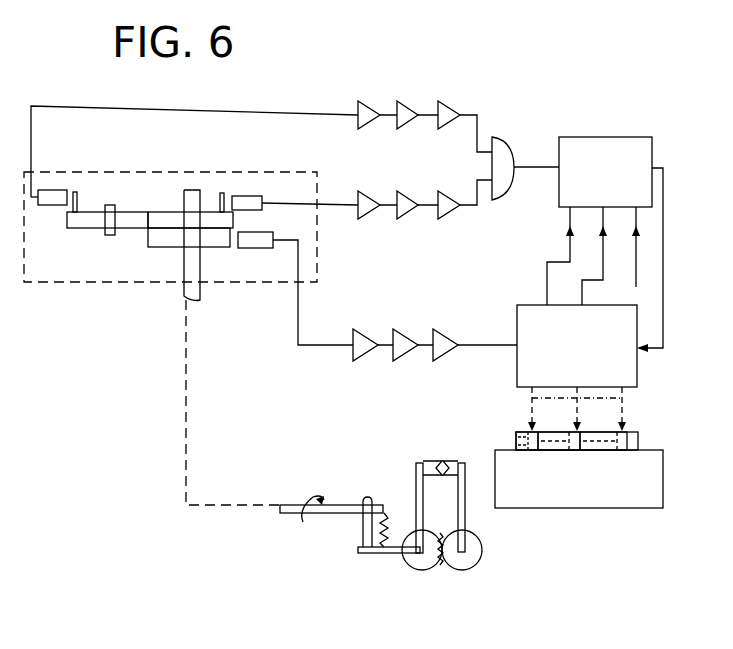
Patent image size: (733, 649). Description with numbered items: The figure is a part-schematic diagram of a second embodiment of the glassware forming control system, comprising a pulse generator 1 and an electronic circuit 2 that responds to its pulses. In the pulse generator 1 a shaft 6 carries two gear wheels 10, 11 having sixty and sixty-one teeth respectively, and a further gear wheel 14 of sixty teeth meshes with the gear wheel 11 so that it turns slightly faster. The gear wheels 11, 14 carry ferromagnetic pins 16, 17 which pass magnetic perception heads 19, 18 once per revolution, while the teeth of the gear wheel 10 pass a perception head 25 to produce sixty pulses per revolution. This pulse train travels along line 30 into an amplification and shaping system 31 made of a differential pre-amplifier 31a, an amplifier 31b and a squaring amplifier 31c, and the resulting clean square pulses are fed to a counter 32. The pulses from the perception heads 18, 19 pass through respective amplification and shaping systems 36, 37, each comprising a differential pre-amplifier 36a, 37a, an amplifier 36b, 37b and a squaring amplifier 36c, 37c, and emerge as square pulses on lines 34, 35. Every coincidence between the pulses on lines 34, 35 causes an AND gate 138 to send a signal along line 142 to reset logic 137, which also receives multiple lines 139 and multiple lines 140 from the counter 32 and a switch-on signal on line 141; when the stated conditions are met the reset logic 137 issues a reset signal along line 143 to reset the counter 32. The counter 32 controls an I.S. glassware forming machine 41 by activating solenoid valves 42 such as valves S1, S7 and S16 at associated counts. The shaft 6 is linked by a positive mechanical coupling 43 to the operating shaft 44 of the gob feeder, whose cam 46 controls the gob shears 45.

The pulse generator 1 is at (124, 249).
The electronic circuit 2 is at (416, 364).
The shaft 6 is at (182, 290).
The gear wheel 10 is at (172, 247).
The gear wheel 11 is at (160, 213).
The gear wheel 14 is at (87, 229).
The pin 16 is at (220, 196).
The pin 17 is at (82, 200).
The magnetic perception head 18 is at (50, 190).
The magnetic perception head 19 is at (250, 197).
The perception head 25 is at (253, 248).
The line 30 is at (297, 326).
The amplification and shaping system 31 is at (419, 343).
The differential pre-amplifier 31a is at (356, 330).
The amplifier 31b is at (396, 330).
The squaring amplifier 31c is at (440, 331).
The counter 32 is at (577, 346).
The line 34 is at (216, 110).
The line 35 is at (322, 207).
The amplification and shaping system 36 is at (416, 73).
The differential pre-amplifier 36a is at (360, 100).
The amplifier 36b is at (400, 102).
The squaring amplifier 36c is at (444, 102).
The amplification and shaping system 37 is at (400, 192).
The differential pre-amplifier 37a is at (360, 192).
The amplifier 37b is at (400, 192).
The squaring amplifier 37c is at (445, 216).
The I.S. glassware forming machine 41 is at (597, 508).
The solenoid valve 42 is at (642, 442).
The positive mechanical coupling 43 is at (186, 432).
The shaft 44 is at (292, 504).
The gob shears 45 is at (408, 490).
The cam 46 is at (362, 528).
The reset logic 137 is at (595, 139).
The AND gate 138 is at (490, 160).
The multiple lines 139 is at (553, 256).
The multiple lines 140 is at (590, 277).
The line 141 is at (636, 270).
The line 142 is at (542, 165).
The line 143 is at (660, 305).
The solenoid-operated valve S1 is at (620, 440).
The solenoid valve S7 is at (570, 440).
The section sensor S16 is at (516, 440).